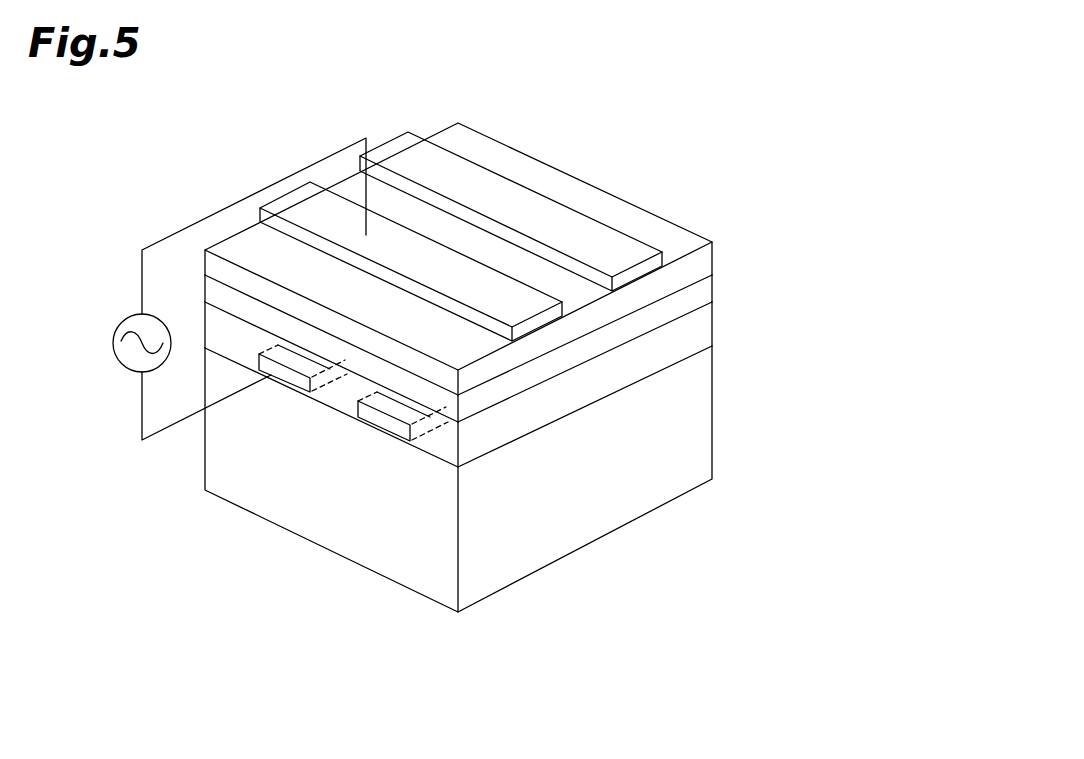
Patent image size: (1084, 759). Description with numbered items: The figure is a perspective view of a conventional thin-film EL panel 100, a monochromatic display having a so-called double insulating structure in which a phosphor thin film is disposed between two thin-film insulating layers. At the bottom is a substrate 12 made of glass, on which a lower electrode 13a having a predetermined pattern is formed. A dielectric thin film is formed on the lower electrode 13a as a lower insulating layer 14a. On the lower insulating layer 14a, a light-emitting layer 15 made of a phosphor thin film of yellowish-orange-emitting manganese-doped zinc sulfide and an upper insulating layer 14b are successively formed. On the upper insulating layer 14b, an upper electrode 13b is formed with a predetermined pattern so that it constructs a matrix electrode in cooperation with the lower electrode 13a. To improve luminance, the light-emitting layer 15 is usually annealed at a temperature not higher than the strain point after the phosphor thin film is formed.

The EL panel 100 is at (594, 111).
The substrate 12 is at (700, 435).
The lower electrode 13a is at (393, 430).
The upper electrode 13b is at (577, 236).
The lower insulating layer 14a is at (700, 327).
The upper insulating layer 14b is at (700, 268).
The light-emitting layer 15 is at (700, 296).